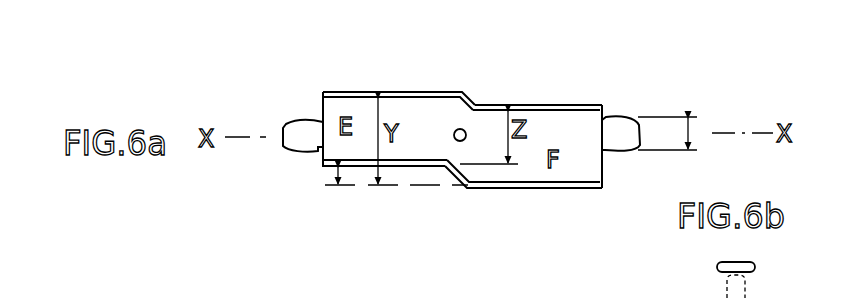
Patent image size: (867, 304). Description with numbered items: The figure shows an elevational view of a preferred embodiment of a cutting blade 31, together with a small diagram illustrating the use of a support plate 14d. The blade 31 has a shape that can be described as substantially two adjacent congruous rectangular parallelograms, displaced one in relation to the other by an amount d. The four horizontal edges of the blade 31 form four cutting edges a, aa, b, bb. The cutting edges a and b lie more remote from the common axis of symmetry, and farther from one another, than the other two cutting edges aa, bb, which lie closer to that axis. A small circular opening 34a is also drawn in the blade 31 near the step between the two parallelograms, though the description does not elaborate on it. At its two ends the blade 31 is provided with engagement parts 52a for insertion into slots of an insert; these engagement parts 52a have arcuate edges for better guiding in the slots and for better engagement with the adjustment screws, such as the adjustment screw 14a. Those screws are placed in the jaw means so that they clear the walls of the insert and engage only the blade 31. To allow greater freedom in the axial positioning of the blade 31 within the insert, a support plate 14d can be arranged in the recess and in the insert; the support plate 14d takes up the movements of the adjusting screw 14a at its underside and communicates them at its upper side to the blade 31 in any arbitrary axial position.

In FIG. 6A, the engagement part 52a is at (296, 124).
In FIG. 6A, the cutting edge a is at (348, 91).
In FIG. 6A, the cutting edge aa is at (327, 168).
In FIG. 6A, the displacement amount d is at (346, 178).
In FIG. 6A, the hole 34a is at (464, 129).
In FIG. 6A, the blade 31 is at (547, 102).
In FIG. 6A, the cutting edge bb is at (585, 103).
In FIG. 6A, the cutting edge b is at (548, 189).
In FIG. 6B, the support plate 14d is at (755, 262).
In FIG. 6B, the adjustment screw 14a is at (745, 287).